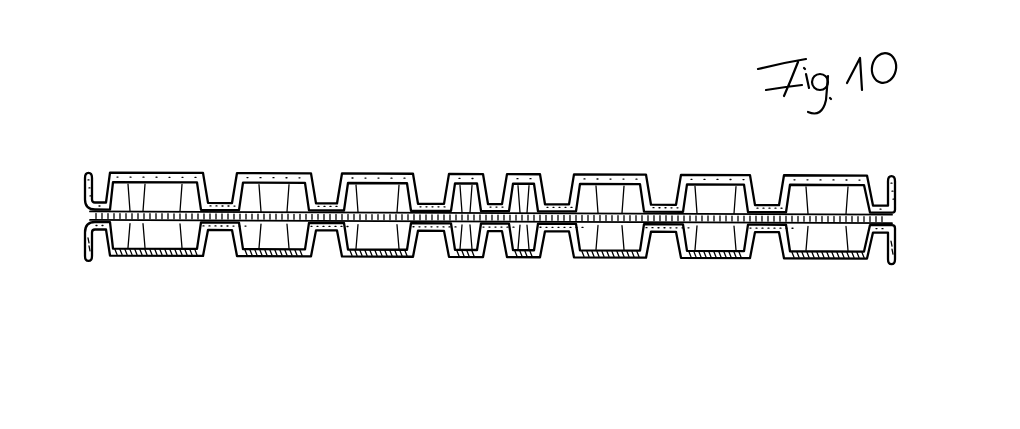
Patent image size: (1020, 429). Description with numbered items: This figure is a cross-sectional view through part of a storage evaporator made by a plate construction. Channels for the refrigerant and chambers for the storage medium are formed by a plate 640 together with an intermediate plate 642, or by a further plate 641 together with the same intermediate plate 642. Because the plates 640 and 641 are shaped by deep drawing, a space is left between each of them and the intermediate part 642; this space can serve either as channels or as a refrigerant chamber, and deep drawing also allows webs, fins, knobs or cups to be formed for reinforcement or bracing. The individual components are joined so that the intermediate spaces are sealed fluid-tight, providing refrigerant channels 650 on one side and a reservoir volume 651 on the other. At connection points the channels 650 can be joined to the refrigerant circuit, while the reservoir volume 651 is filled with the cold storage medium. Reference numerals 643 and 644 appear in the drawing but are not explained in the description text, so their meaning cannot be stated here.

The plate 640 is at (383, 172).
The plate 641 is at (373, 258).
The intermediate plate 642 is at (468, 223).
The intermediate layer 643 is at (555, 208).
The lower ridge cavity 644 is at (660, 231).
The refrigerant channels 650 is at (270, 202).
The reservoir volume 651 is at (271, 238).